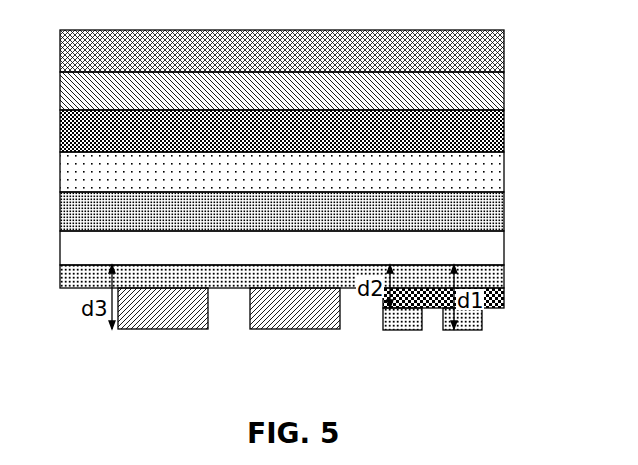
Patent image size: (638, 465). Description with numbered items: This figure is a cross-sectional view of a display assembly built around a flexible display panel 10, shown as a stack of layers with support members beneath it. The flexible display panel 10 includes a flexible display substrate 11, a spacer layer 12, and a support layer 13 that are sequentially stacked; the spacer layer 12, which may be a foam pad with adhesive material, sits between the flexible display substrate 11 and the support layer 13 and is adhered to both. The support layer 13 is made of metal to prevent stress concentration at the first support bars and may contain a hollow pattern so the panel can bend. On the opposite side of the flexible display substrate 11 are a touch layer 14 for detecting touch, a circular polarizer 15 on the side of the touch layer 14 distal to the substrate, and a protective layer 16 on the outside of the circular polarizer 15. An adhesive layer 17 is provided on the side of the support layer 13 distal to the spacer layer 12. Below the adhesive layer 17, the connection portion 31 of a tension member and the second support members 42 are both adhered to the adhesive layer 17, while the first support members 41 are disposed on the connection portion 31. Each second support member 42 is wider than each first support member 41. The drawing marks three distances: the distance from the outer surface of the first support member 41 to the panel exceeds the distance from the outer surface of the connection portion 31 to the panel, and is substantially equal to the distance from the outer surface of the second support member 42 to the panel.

The flexible display panel 10 is at (48, 43).
The flexible display substrate 11 is at (504, 172).
The spacer layer 12 is at (504, 210).
The support layer 13 is at (504, 247).
The touch layer 14 is at (504, 135).
The circular polarizer 15 is at (504, 88).
The protective layer 16 is at (504, 50).
The adhesive layer 17 is at (504, 278).
The connection portion 31 is at (504, 301).
The first support member 41 is at (467, 331).
The second support member 42 is at (165, 330).